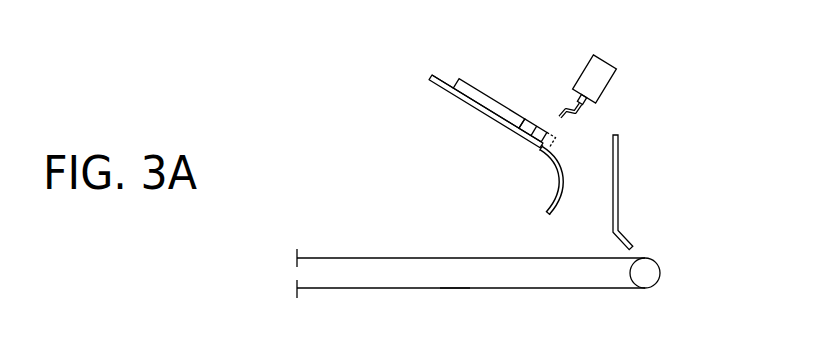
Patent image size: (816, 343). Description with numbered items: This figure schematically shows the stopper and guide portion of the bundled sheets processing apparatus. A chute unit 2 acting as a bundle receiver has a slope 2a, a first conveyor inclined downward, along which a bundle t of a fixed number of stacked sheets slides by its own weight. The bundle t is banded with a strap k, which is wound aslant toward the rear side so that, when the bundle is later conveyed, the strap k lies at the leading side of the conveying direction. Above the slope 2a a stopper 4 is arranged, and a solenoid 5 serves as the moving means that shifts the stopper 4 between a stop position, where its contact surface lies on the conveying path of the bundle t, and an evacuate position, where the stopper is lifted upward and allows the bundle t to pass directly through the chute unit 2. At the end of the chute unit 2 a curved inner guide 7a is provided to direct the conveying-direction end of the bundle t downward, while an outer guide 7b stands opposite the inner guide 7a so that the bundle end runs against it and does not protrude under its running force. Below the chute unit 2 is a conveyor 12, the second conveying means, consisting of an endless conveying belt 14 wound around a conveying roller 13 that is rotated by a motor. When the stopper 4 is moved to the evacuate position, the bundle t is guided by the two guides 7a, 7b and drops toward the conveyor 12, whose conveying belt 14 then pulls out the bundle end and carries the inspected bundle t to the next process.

The chute unit 2 is at (445, 90).
The slope 2a is at (447, 80).
The bundle t is at (490, 97).
The strap k is at (533, 122).
The stopper 4 is at (565, 92).
The solenoid 5 is at (604, 64).
The inner guide 7a is at (562, 195).
The outer guide 7b is at (618, 163).
The conveyor 12 is at (400, 235).
The conveying roller 13 is at (653, 273).
The conveying belt 14 is at (453, 290).